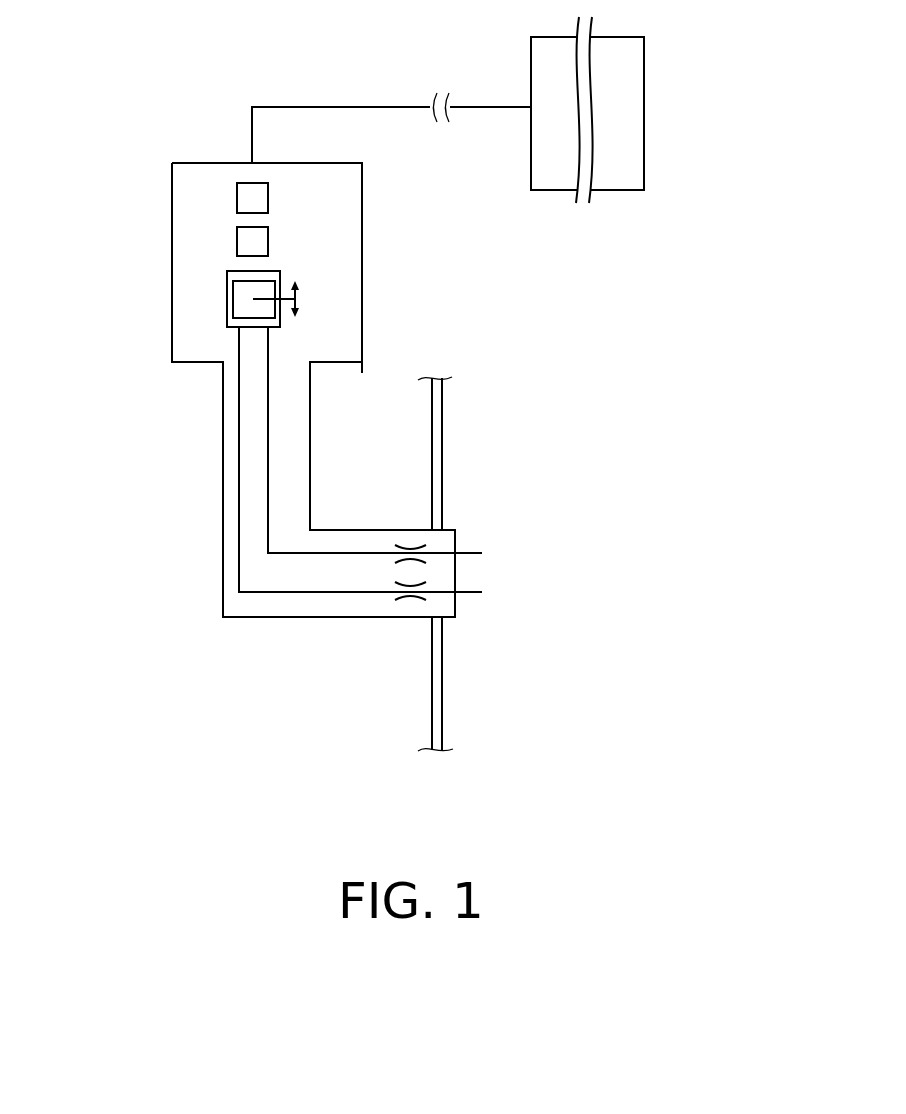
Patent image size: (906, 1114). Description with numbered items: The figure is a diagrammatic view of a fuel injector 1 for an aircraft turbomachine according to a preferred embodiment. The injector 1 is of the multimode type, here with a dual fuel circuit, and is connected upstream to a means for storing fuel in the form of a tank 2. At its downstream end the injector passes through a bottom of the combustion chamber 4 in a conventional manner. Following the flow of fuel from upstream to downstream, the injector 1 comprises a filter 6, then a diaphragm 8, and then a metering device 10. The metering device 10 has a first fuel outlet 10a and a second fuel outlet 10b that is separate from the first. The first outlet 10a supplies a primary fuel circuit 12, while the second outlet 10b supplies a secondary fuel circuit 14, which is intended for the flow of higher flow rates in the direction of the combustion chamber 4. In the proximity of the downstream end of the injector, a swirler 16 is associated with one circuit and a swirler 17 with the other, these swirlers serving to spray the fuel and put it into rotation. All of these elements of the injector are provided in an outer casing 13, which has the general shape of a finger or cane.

The fuel injector 1 is at (138, 258).
The tank 2 is at (637, 77).
The combustion chamber 4 is at (442, 495).
The filter 6 is at (268, 193).
The diaphragm 8 is at (268, 233).
The metering device 10 is at (301, 291).
The first fuel outlet 10a is at (238, 331).
The second fuel outlet 10b is at (267, 329).
The primary fuel circuit 12 is at (239, 453).
The outer casing 13 is at (312, 448).
The secondary fuel circuit 14 is at (268, 498).
The swirler 16 is at (408, 600).
The swirler 17 is at (410, 548).